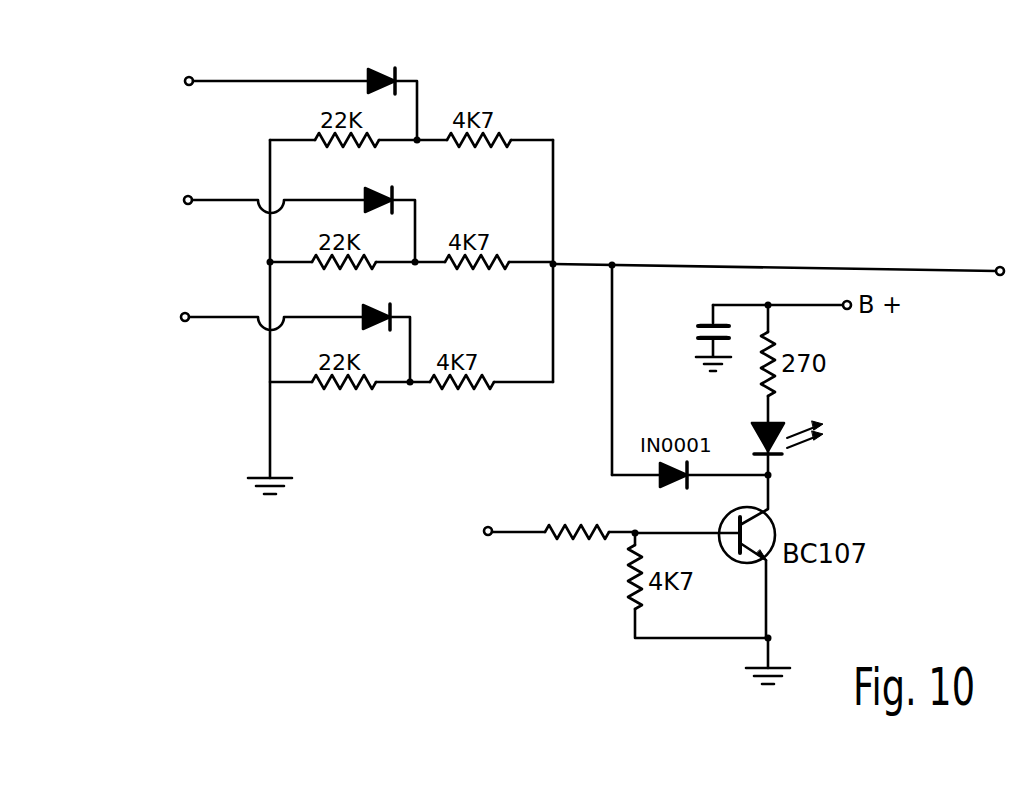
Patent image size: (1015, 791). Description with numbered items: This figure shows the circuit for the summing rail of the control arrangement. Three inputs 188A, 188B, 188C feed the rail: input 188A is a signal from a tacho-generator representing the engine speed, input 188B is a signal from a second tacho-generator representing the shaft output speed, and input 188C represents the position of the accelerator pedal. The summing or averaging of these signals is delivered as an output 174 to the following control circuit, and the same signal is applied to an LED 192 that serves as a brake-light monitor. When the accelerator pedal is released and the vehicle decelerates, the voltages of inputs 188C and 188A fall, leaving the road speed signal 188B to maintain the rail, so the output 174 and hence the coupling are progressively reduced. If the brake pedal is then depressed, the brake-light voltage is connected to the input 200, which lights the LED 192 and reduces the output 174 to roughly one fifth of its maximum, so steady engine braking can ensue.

The input 188A is at (186, 78).
The input 188B is at (185, 196).
The input 188C is at (182, 313).
The output 174 is at (918, 268).
The LED 192 is at (774, 457).
The brake light input 200 is at (484, 537).